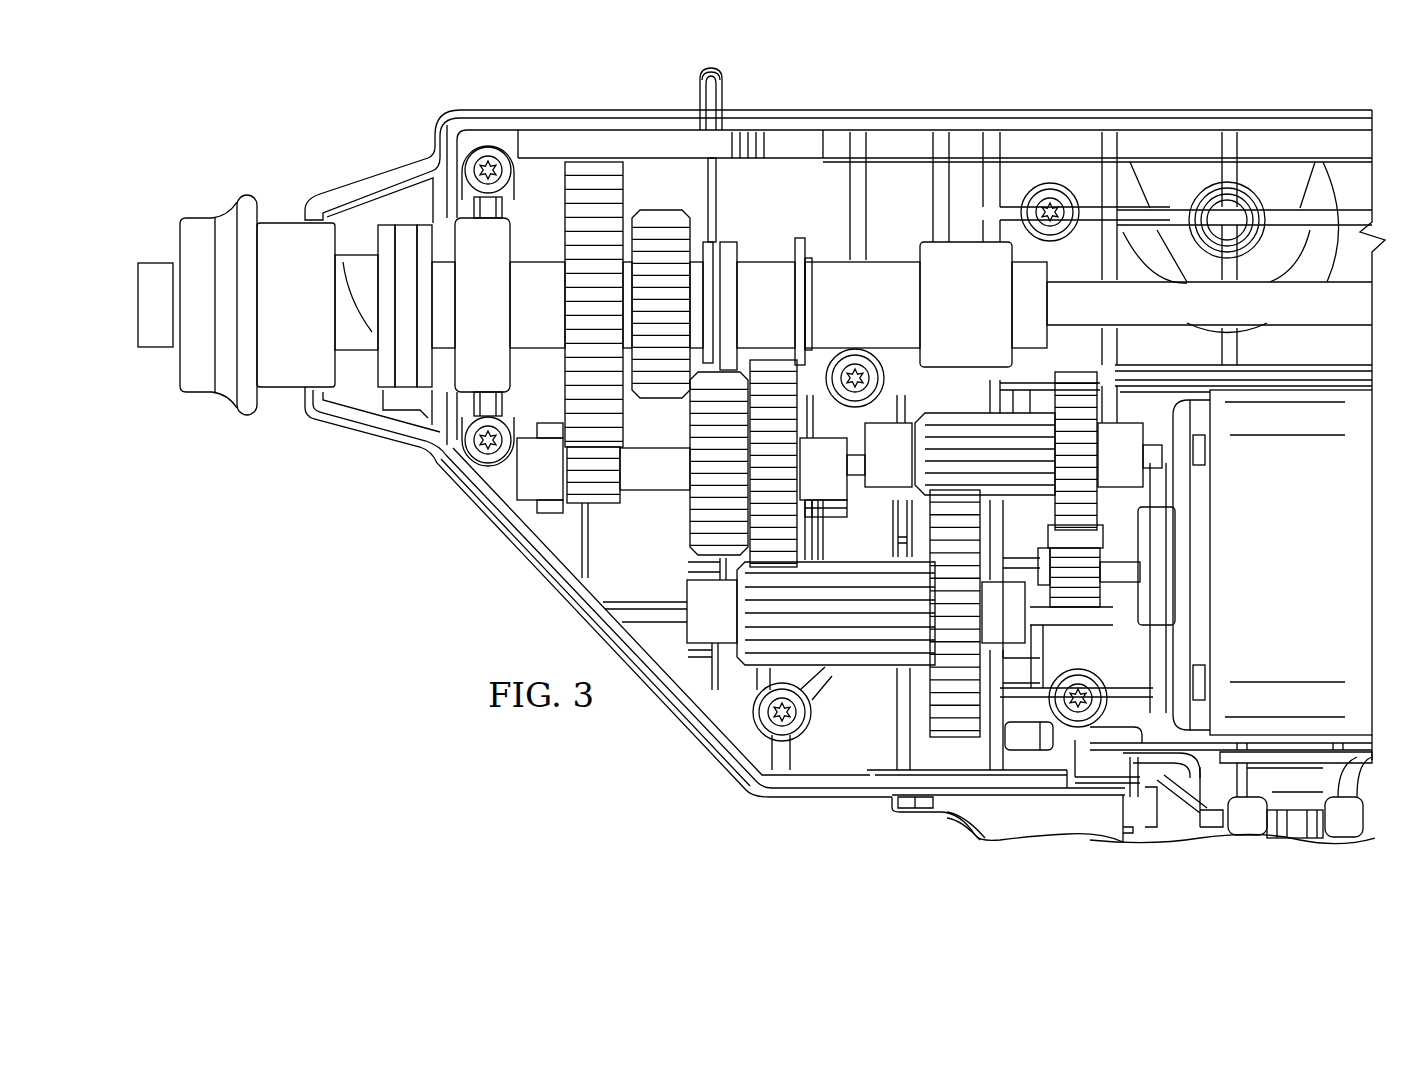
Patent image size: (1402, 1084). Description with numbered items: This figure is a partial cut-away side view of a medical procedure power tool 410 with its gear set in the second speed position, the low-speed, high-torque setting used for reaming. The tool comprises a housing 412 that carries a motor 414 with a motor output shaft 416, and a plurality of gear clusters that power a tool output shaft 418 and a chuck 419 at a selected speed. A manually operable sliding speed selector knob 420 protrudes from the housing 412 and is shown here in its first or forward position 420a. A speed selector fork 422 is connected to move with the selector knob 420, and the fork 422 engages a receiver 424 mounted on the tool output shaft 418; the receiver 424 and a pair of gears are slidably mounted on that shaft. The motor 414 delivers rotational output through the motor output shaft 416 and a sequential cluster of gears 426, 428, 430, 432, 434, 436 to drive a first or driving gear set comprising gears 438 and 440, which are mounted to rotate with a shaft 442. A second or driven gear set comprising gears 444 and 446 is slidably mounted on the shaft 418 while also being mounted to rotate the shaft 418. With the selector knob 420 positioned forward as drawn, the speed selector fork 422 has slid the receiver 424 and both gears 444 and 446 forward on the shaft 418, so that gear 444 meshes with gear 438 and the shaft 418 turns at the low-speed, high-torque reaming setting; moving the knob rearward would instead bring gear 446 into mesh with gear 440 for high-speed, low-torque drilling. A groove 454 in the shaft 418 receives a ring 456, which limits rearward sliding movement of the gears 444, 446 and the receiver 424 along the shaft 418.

The medical procedure power tool 410 is at (1024, 78).
The housing 412 is at (930, 110).
The motor 414 is at (1265, 493).
The motor output shaft 416 is at (1125, 587).
The tool output shaft 418 is at (555, 262).
The chuck 419 is at (200, 215).
The sliding speed selector knob 420 is at (730, 85).
The first or forward position 420a is at (712, 68).
The speed selector fork 422 is at (712, 250).
The receiver 424 is at (730, 290).
The gear 426 is at (1143, 558).
The gear 428 is at (1077, 370).
The gear 430 is at (945, 410).
The gear 432 is at (958, 737).
The gear 434 is at (867, 667).
The gear 436 is at (798, 520).
The driving gear 438 is at (603, 508).
The driving gear 440 is at (683, 523).
The shaft 442 is at (648, 495).
The driven gear 444 is at (600, 157).
The driven gear 446 is at (660, 210).
The groove 454 is at (807, 270).
The ring 456 is at (803, 323).